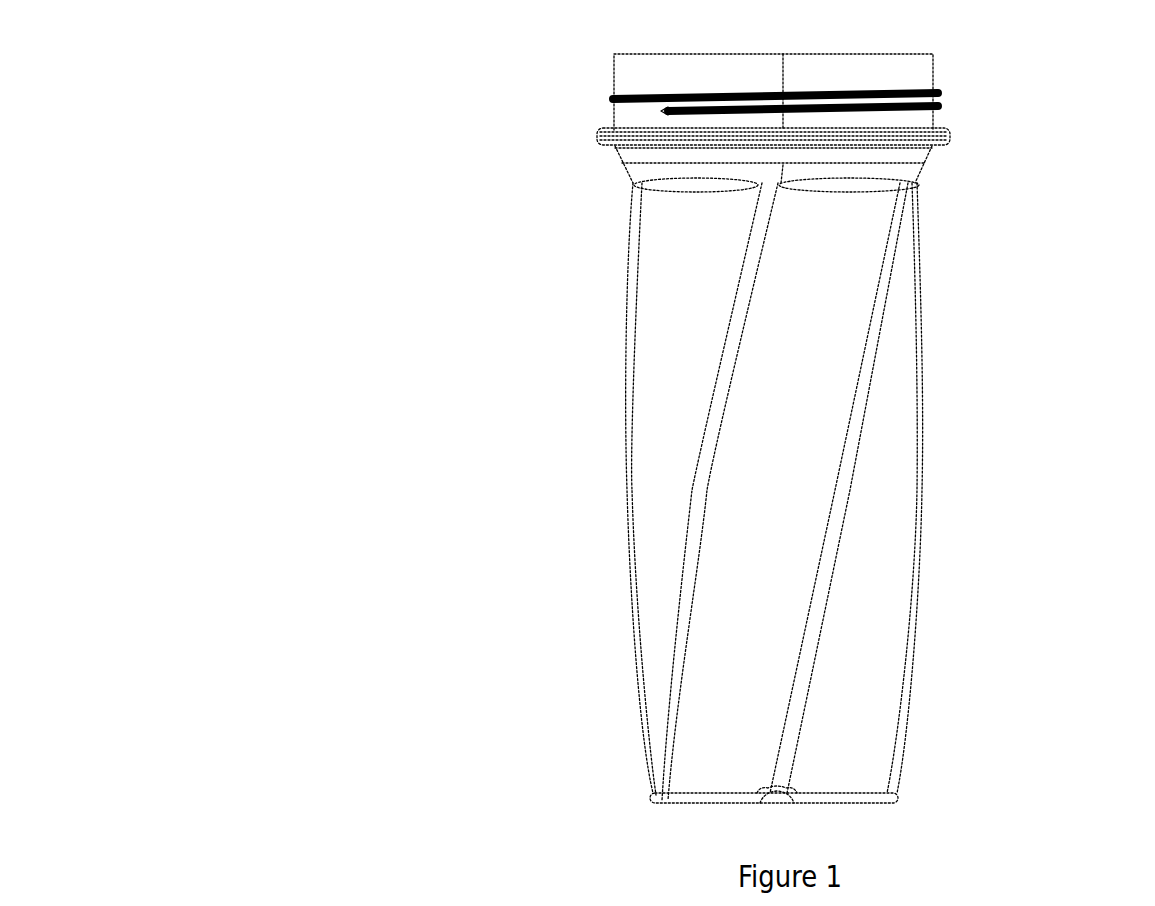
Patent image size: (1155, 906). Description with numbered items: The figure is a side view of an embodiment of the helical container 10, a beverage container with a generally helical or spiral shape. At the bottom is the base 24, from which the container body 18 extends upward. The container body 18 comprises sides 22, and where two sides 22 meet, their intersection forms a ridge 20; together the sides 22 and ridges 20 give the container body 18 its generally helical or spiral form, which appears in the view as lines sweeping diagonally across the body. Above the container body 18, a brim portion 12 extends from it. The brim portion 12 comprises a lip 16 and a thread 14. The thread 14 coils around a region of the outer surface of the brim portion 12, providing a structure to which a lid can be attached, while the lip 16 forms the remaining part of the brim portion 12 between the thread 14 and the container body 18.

The helical container 10 is at (375, 100).
The brim portion 12 is at (933, 66).
The thread 14 is at (907, 112).
The lip 16 is at (598, 133).
The container body 18 is at (625, 315).
The ridge 20 is at (838, 511).
The sides 22 is at (850, 688).
The base 24 is at (850, 805).